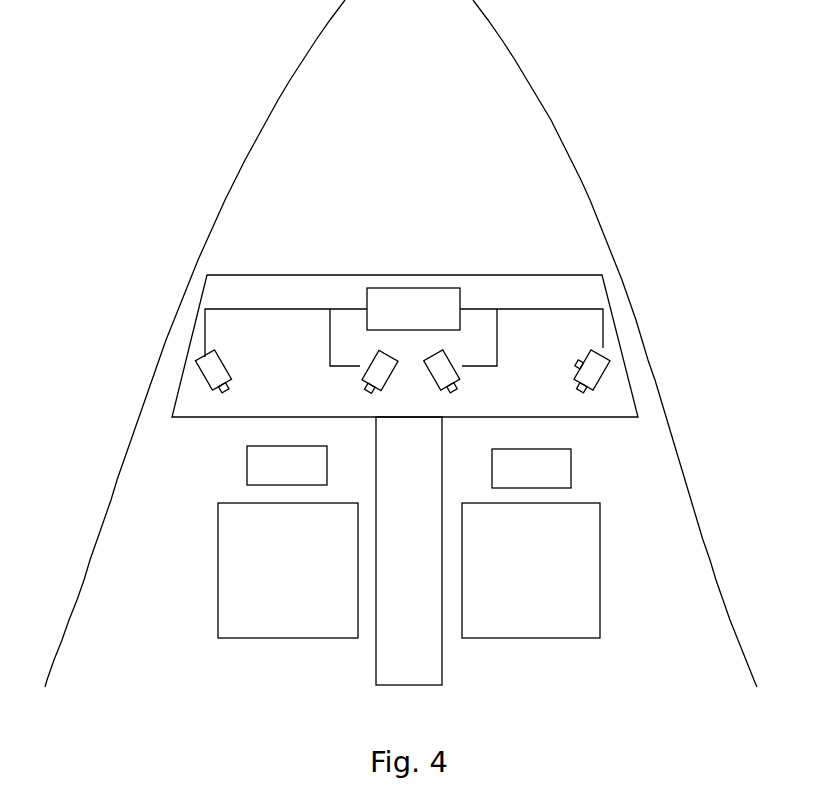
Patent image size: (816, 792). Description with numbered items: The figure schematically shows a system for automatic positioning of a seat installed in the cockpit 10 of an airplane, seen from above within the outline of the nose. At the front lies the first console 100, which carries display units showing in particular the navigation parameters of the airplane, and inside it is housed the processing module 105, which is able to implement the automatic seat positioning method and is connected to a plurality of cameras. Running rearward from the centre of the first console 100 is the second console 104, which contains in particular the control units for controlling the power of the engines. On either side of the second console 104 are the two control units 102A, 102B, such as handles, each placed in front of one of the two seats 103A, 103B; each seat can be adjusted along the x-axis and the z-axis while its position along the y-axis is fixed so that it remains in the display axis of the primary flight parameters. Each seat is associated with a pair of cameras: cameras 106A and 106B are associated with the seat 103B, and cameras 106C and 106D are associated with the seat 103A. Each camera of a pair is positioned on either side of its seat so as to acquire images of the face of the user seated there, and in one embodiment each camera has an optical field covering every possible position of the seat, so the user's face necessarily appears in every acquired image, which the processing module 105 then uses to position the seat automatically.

The cockpit 10 is at (573, 165).
The first console 100 is at (623, 367).
The processing module 105 is at (414, 288).
The camera 106A is at (231, 367).
The camera 106B is at (362, 380).
The camera 106C is at (461, 372).
The camera 106D is at (582, 365).
The second console 104 is at (443, 672).
The control unit 102A is at (571, 460).
The control unit 102B is at (247, 466).
The seat 103A is at (600, 603).
The seat 103B is at (218, 585).